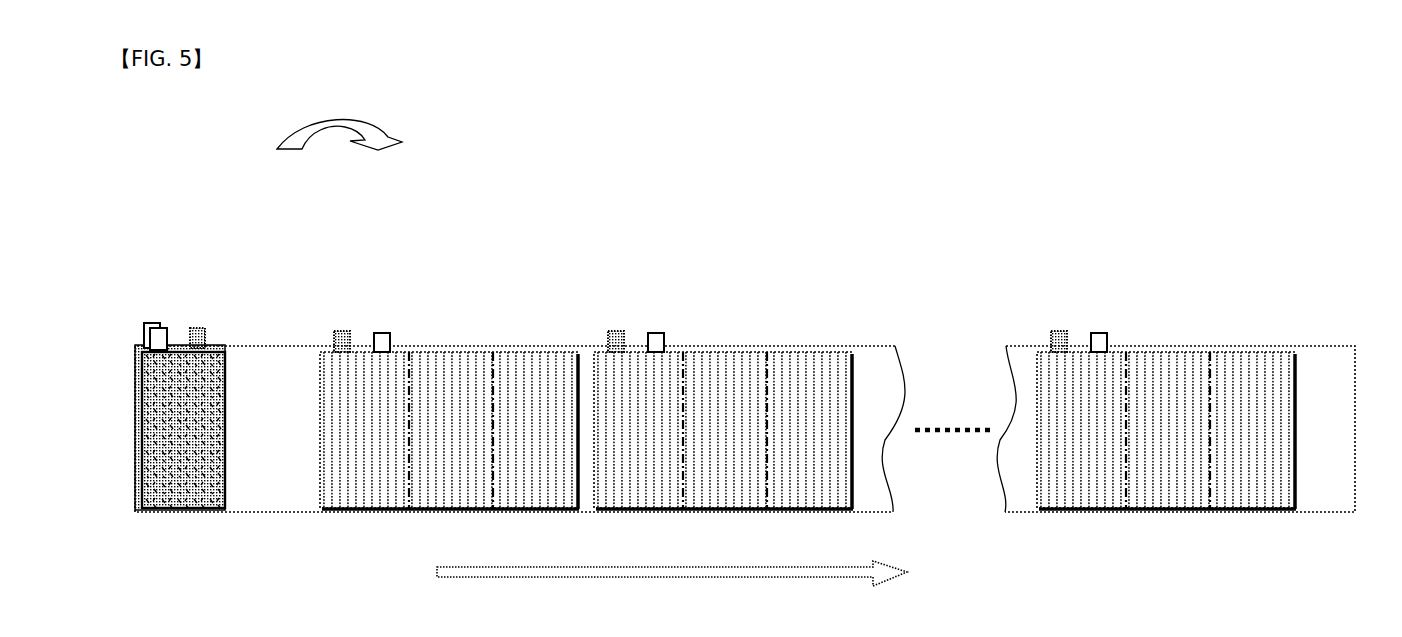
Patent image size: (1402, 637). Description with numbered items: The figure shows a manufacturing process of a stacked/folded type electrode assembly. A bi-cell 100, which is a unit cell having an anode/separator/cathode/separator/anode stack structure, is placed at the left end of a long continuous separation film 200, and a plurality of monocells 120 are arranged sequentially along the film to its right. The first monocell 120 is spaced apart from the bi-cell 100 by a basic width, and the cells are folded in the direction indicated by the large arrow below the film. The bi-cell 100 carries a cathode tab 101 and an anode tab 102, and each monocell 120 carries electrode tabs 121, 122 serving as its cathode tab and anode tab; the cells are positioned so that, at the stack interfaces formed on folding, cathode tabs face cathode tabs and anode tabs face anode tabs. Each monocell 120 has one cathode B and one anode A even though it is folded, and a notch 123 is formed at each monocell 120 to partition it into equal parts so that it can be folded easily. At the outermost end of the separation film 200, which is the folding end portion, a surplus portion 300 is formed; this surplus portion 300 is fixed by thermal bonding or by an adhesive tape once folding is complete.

The bi-cell 100 is at (229, 405).
The cathode tab 101 is at (198, 327).
The anode tab 102 is at (152, 325).
The monocell 120 is at (825, 408).
The electrode tab 121 is at (340, 328).
The electrode tab 122 is at (385, 333).
The notch 123 is at (413, 392).
The separation film 200 is at (870, 345).
The surplus portion 300 is at (1325, 495).